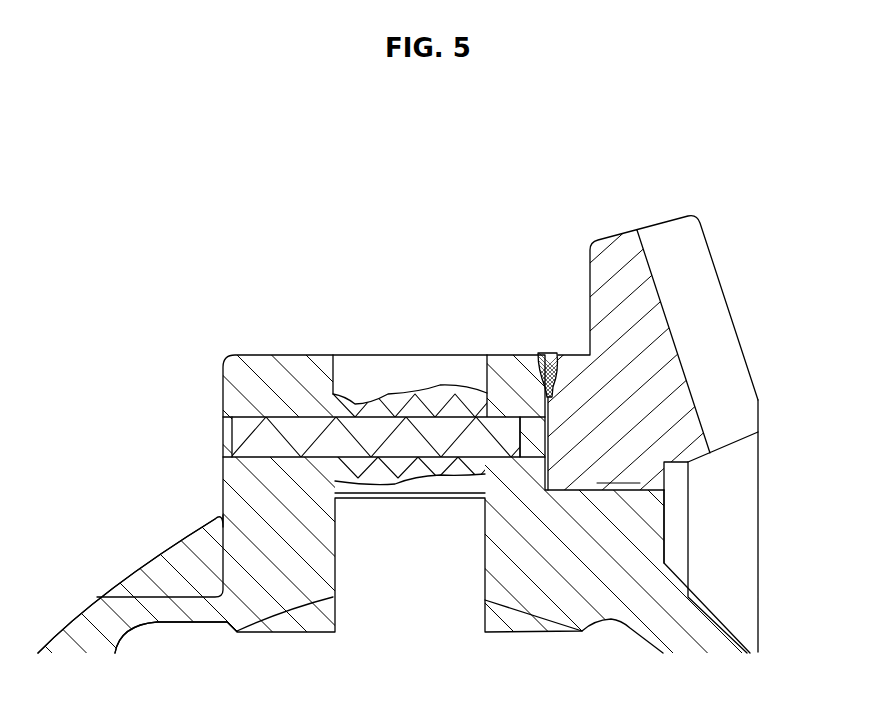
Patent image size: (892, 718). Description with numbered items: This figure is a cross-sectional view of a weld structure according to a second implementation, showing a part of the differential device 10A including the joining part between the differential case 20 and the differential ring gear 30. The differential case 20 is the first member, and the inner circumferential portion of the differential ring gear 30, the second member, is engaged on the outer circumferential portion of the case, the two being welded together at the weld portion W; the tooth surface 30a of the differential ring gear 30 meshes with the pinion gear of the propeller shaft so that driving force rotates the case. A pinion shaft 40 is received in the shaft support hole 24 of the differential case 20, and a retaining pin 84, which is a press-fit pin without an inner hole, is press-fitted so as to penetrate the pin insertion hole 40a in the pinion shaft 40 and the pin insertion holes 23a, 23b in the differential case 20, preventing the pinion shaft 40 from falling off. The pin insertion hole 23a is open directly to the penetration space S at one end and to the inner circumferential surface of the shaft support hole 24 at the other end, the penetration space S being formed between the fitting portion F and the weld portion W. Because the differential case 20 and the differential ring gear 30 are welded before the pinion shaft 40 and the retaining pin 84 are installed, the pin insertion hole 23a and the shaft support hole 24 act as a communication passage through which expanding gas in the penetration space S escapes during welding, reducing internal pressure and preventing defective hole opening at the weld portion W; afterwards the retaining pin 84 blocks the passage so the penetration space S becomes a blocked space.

The differential device 10A is at (712, 172).
The differential case 20 is at (685, 625).
The pin insertion hole 23a is at (527, 405).
The pin insertion hole 23b is at (278, 427).
The shaft support hole 24 is at (352, 370).
The differential ring gear 30 is at (615, 257).
The tooth surface 30a is at (690, 260).
The pinion shaft 40 is at (373, 578).
The pin insertion hole 40a is at (326, 426).
The retaining pin 84 is at (240, 438).
The weld portion W is at (547, 352).
The fitting portion F is at (600, 498).
The penetration space S is at (551, 470).